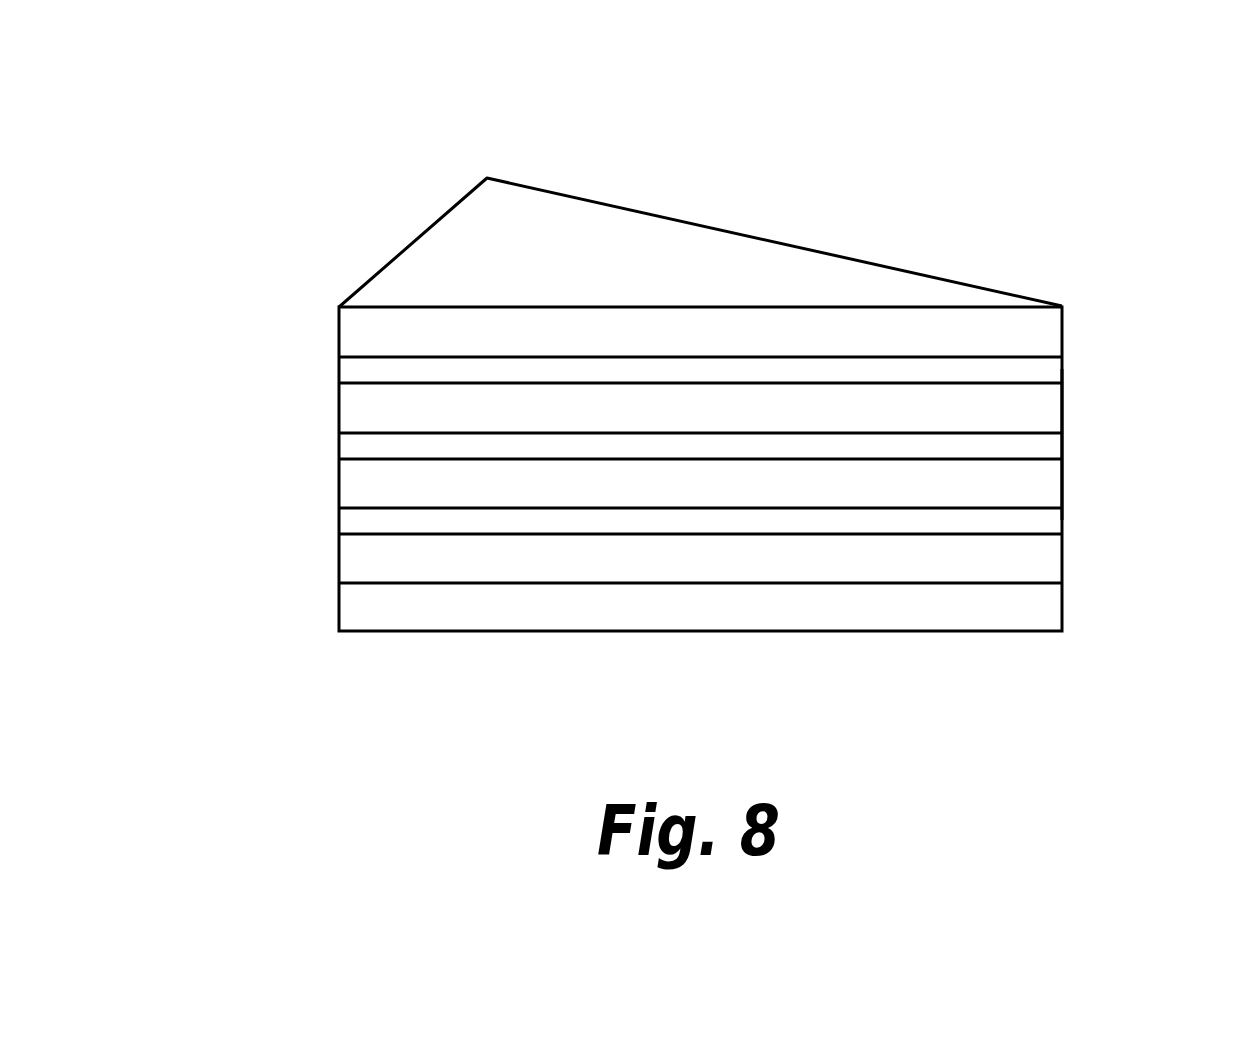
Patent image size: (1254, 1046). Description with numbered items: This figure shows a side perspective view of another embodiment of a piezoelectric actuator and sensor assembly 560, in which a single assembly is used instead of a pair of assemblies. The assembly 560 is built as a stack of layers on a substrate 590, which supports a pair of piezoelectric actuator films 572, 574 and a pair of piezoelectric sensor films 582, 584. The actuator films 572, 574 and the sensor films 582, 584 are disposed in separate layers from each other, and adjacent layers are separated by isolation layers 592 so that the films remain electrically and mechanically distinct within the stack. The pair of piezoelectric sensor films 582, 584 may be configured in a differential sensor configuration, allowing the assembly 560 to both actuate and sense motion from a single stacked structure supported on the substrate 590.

The piezoelectric actuator and sensor assembly 560 is at (778, 148).
The piezoelectric sensor film 584 is at (337, 345).
The piezoelectric sensor film 582 is at (337, 405).
The piezoelectric actuator film 574 is at (337, 477).
The piezoelectric actuator film 572 is at (337, 558).
The substrate 590 is at (365, 631).
The isolation layers 592 is at (1062, 369).